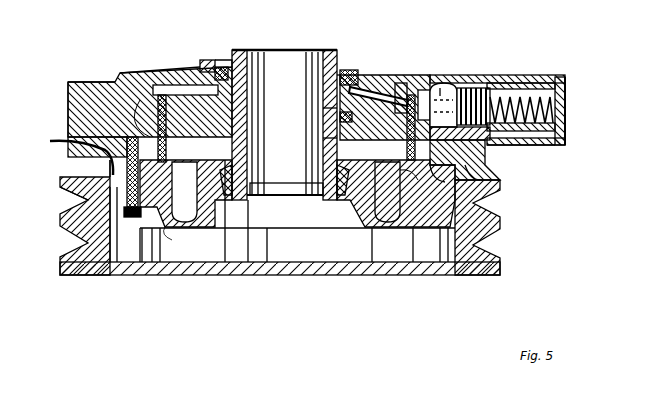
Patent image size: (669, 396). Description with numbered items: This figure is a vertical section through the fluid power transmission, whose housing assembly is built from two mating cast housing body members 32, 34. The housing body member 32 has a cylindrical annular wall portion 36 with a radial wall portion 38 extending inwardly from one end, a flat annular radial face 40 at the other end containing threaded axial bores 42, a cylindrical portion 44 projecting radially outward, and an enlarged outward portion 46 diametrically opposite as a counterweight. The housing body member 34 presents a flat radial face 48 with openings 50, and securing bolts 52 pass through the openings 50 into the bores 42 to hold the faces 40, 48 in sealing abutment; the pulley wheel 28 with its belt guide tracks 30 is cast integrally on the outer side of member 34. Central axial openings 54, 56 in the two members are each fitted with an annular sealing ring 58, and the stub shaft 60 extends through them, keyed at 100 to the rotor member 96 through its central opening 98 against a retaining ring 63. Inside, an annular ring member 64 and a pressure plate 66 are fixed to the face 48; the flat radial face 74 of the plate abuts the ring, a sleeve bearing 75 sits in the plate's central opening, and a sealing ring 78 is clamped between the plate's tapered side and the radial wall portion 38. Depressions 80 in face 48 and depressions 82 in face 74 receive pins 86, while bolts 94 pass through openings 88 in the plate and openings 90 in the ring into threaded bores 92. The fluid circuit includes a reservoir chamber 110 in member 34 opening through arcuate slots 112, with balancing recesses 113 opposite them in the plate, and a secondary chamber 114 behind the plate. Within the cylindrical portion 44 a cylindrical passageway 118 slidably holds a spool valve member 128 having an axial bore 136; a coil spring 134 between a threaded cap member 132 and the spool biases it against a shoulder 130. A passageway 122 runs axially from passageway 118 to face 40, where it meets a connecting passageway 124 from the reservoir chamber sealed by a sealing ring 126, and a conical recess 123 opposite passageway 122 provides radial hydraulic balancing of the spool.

The pulley wheel 28 is at (505, 270).
The annular belt guide track 30 is at (88, 247).
The housing body member 32 is at (113, 73).
The housing body member 34 is at (490, 172).
The annular wall portion 36 is at (135, 108).
The radial wall portion 38 is at (208, 60).
The annular radial face 40 is at (68, 143).
The threaded axial bore 42 is at (68, 127).
The cylindrical portion 44 is at (548, 75).
The enlarged outward portion 46 is at (100, 80).
The flat radial face 48 is at (110, 173).
The opening 50 is at (90, 202).
The securing bolt 52 is at (133, 275).
The central axial opening 54 is at (338, 80).
The central axial opening 56 is at (340, 226).
The annular sealing ring 58 is at (240, 50).
The stub shaft 60 is at (330, 50).
The retaining ring 63 is at (312, 200).
The annular ring member 64 is at (145, 80).
The pressure plate 66 is at (203, 60).
The flat radial face 74 is at (375, 90).
The sleeve bearing 75 is at (325, 113).
The sealing ring 78 is at (350, 72).
The circular depression 80 is at (186, 193).
The circular depression 82 is at (165, 128).
The pin 86 is at (68, 112).
The opening 88 is at (408, 83).
The opening 90 is at (440, 176).
The threaded bore 92 is at (416, 170).
The bolt 94 is at (428, 88).
The rotor member 96 is at (250, 140).
The central opening 98 is at (250, 125).
The key 100 is at (330, 138).
The reservoir chamber 110 is at (183, 226).
The arcuate slot 112 is at (286, 192).
The concentric arcuate recess 113 is at (218, 67).
The secondary chamber 114 is at (180, 85).
The cylindrical passageway 118 is at (483, 88).
The cylindrical passageway 122 is at (487, 145).
The conical recess 123 is at (444, 90).
The connecting passageway 124 is at (488, 205).
The sealing ring 126 is at (498, 182).
The spool valve member 128 is at (535, 75).
The shoulder 130 is at (468, 64).
The cap member 132 is at (567, 103).
The coil spring 134 is at (510, 147).
The bore 136 is at (515, 75).